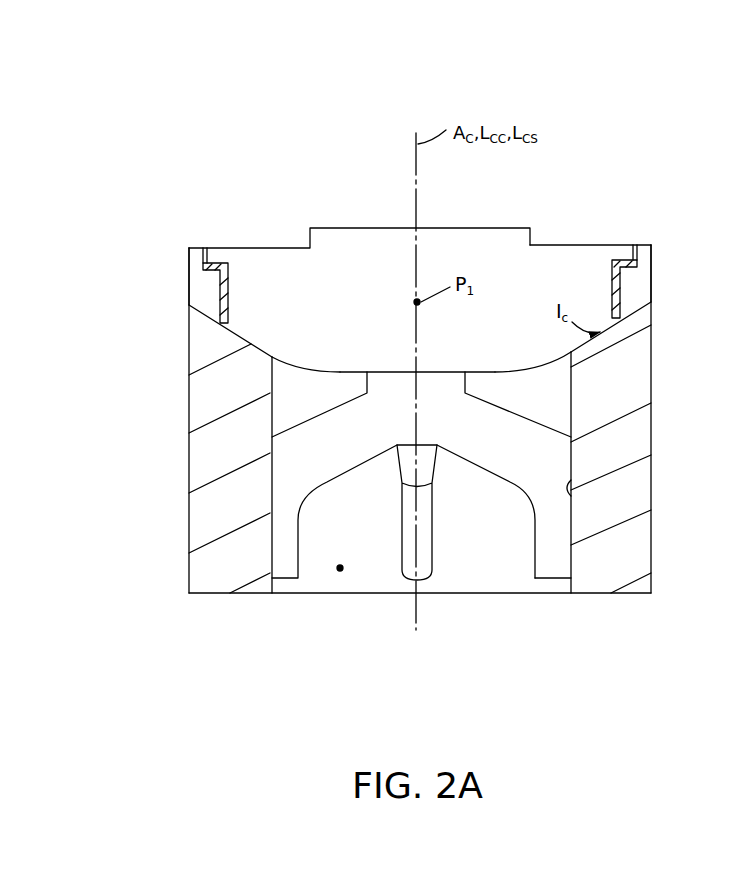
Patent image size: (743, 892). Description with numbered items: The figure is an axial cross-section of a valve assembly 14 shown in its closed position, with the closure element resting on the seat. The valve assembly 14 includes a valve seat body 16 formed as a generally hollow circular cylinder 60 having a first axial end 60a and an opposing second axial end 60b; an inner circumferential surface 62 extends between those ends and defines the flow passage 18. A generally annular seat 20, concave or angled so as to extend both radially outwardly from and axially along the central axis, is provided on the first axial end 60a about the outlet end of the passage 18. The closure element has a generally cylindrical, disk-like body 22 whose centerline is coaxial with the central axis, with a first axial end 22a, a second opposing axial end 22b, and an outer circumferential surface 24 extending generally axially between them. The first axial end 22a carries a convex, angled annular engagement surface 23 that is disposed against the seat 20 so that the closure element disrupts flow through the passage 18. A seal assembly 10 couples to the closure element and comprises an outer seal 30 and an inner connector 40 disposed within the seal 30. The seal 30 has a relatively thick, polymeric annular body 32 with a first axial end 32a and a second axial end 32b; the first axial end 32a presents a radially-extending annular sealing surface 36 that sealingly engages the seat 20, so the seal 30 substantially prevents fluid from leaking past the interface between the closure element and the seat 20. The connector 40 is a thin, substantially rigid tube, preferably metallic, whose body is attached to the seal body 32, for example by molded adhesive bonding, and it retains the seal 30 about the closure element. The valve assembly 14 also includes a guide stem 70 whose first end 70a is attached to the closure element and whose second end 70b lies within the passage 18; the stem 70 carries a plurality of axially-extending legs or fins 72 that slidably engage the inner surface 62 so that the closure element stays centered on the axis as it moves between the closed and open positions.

The seal assembly 10 is at (188, 230).
The valve assembly 14 is at (226, 152).
The valve seat body 16 is at (660, 424).
The flow passage 18 is at (340, 568).
The annular seat 20 is at (252, 340).
The closure element body 22 is at (564, 243).
The first axial end 22a is at (540, 365).
The second axial end 22b is at (607, 243).
The engagement surface 23 is at (216, 348).
The outer circumferential surface 24 is at (622, 286).
The outer seal 30 is at (187, 284).
The seal body 32 is at (647, 268).
The first axial end of seal body 32a is at (635, 308).
The second axial end of seal body 32b is at (640, 244).
The sealing surface 36 is at (197, 322).
The inner connector 40 is at (231, 291).
The hollow circular cylinder 60 is at (187, 461).
The first axial end of cylinder 60a is at (645, 318).
The second axial end of cylinder 60b is at (581, 594).
The inner circumferential surface 62 is at (574, 498).
The guide stem 70 is at (268, 498).
The first end of guide stem 70a is at (443, 372).
The second end of guide stem 70b is at (548, 578).
The legs or fins 72 is at (289, 532).